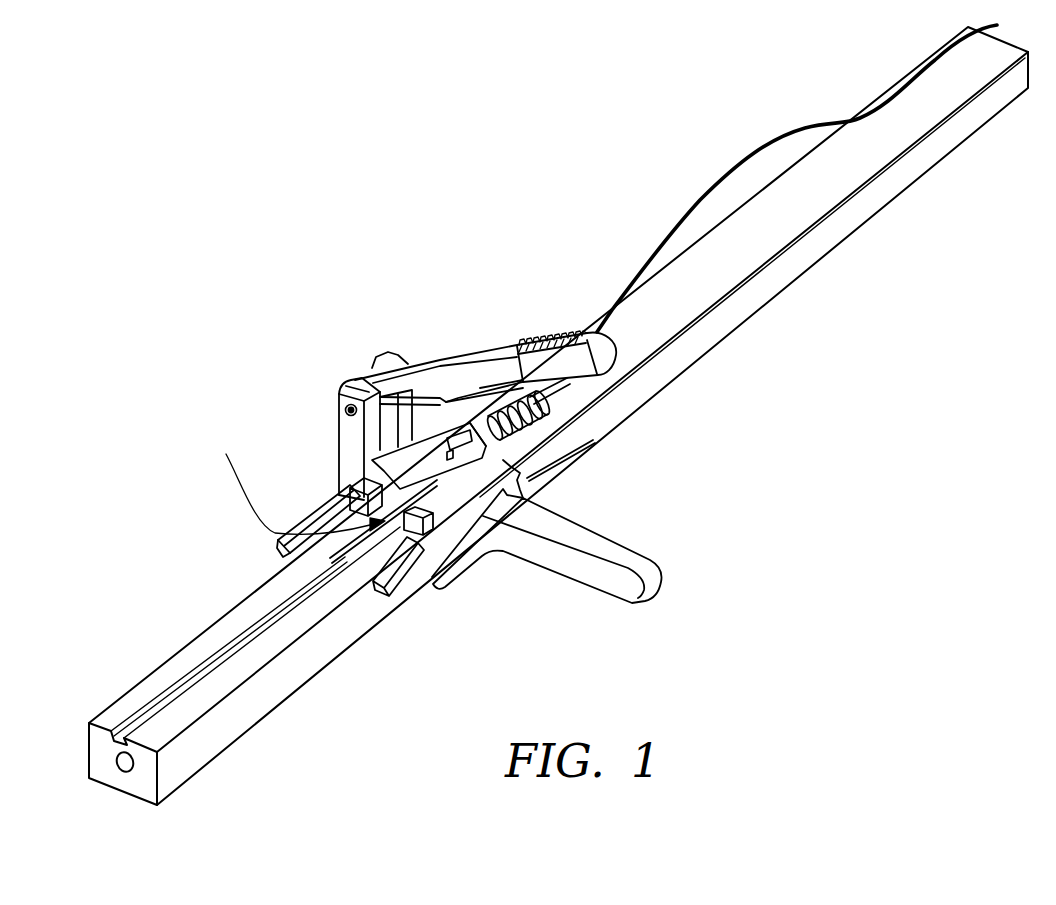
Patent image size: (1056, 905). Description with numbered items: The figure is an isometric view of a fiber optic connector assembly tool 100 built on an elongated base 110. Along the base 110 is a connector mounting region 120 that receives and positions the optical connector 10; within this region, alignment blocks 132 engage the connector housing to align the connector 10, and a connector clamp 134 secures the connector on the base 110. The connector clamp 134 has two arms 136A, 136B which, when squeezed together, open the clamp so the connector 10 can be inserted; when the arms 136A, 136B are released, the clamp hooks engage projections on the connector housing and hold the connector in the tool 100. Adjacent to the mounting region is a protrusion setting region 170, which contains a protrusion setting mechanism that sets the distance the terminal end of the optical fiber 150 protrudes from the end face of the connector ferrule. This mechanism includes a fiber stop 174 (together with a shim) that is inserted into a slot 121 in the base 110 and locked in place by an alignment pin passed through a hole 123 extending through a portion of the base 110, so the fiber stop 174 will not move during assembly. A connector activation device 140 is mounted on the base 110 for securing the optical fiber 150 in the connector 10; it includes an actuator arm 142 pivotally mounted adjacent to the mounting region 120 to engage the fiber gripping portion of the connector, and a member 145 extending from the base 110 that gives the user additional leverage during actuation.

The fiber optic connector assembly tool 100 is at (186, 256).
The base 110 is at (221, 738).
The hole 123 is at (124, 772).
The connector mounting region 120 is at (323, 397).
The slot 121 is at (392, 470).
The connector activation device 140 is at (440, 373).
The actuator arm 142 is at (477, 374).
The fiber stop 174 is at (378, 472).
The optical fiber 150 is at (650, 252).
The optical connector 10 is at (520, 477).
The member 145 is at (598, 582).
The connector clamp 134 is at (341, 594).
The arm 136A is at (394, 572).
The arm 136B is at (288, 536).
The alignment blocks 132 is at (357, 500).
The protrusion setting region 170 is at (282, 482).